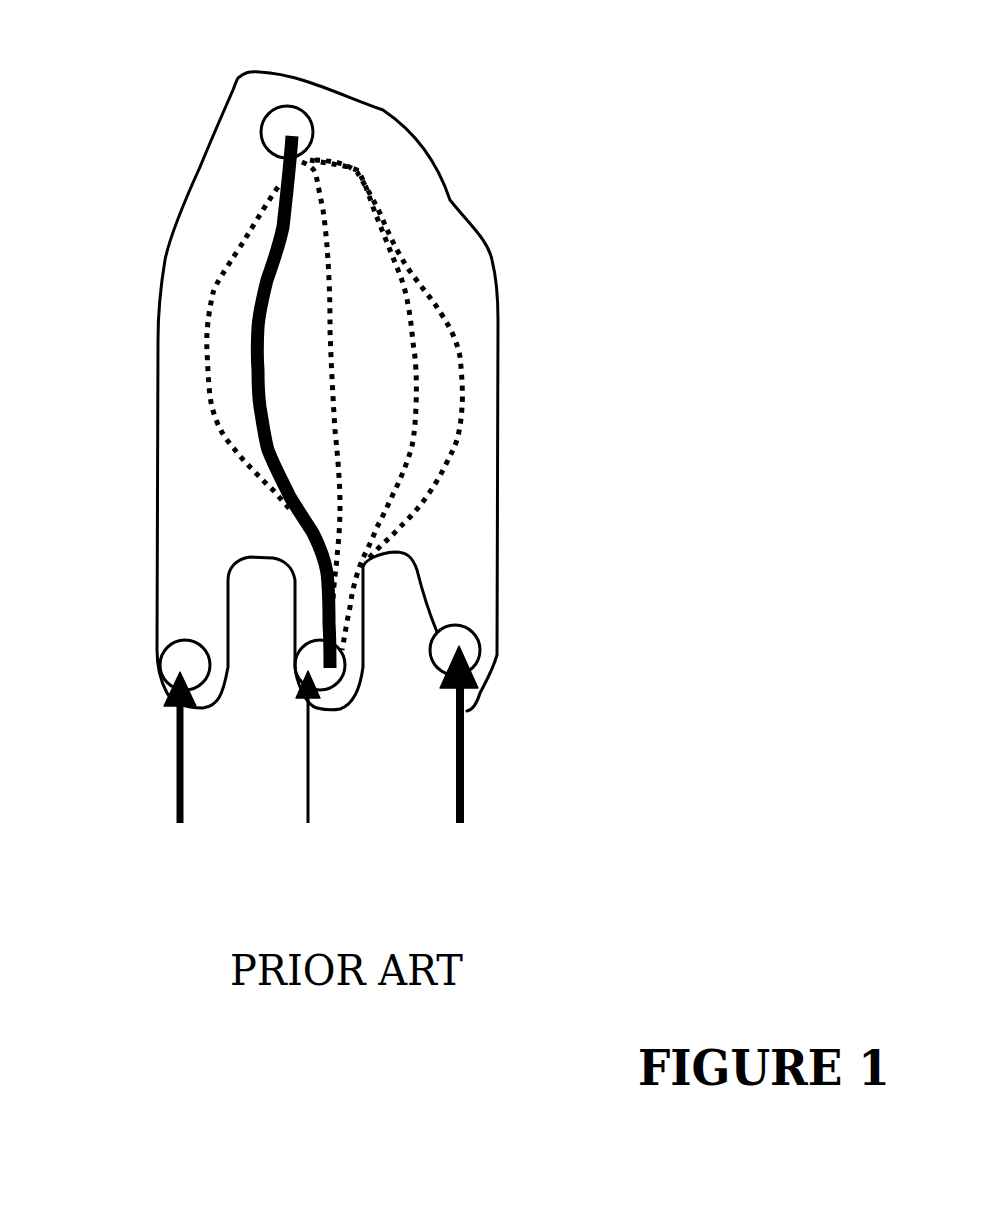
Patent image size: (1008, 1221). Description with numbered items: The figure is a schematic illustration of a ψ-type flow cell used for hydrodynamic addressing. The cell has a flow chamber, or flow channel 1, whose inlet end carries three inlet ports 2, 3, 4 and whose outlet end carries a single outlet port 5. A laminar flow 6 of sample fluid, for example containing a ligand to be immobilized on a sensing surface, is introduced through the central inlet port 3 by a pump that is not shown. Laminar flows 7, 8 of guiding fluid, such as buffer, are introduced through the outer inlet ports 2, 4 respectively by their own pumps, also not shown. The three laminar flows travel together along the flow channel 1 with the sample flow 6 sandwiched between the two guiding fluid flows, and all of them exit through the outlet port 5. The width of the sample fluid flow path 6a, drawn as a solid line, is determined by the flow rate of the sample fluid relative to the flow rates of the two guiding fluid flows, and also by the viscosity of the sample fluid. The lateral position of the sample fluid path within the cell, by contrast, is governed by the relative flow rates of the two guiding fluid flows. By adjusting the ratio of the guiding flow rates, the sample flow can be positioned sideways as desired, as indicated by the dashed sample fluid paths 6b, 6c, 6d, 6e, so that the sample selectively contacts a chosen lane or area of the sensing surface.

The flow channel 1 is at (475, 483).
The inlet port 2 is at (180, 663).
The central inlet port 3 is at (314, 667).
The inlet port 4 is at (458, 647).
The outlet port 5 is at (288, 125).
The laminar flow of sample fluid 6 is at (317, 768).
The sample fluid flow path 6a is at (248, 383).
The dashed sample fluid path 6b is at (210, 278).
The dashed sample fluid path 6c is at (332, 244).
The dashed sample fluid path 6d is at (394, 289).
The dashed sample fluid path 6e is at (450, 333).
The laminar flow of guiding fluid 7 is at (168, 767).
The laminar flow of guiding fluid 8 is at (465, 790).